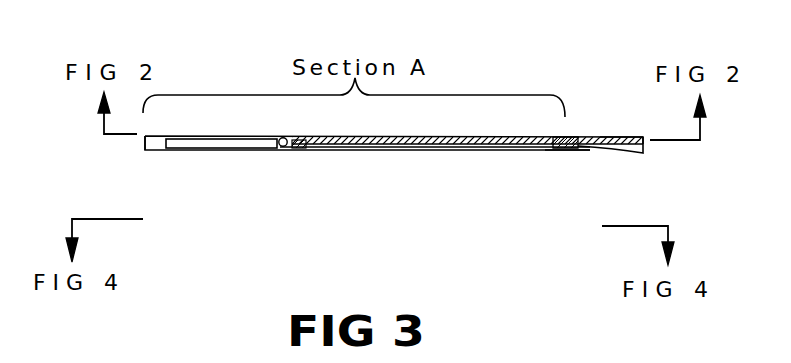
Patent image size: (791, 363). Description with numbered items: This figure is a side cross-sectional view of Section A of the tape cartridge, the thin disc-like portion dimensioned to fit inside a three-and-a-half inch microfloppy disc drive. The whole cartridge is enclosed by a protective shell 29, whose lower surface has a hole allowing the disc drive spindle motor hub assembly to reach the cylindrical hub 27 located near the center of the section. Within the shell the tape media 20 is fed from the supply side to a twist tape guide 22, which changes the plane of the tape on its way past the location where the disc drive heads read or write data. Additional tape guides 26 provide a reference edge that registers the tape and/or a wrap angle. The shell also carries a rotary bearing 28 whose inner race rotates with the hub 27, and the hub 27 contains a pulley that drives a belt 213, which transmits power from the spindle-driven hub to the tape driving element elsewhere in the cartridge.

The tape media 20 is at (616, 153).
The twist tape guide 22 is at (212, 145).
The tape guide 26 is at (546, 150).
The cylindrical hub 27 is at (397, 137).
The rotary bearing 28 is at (433, 148).
The protective shell 29 is at (143, 152).
The belt 213 is at (613, 137).